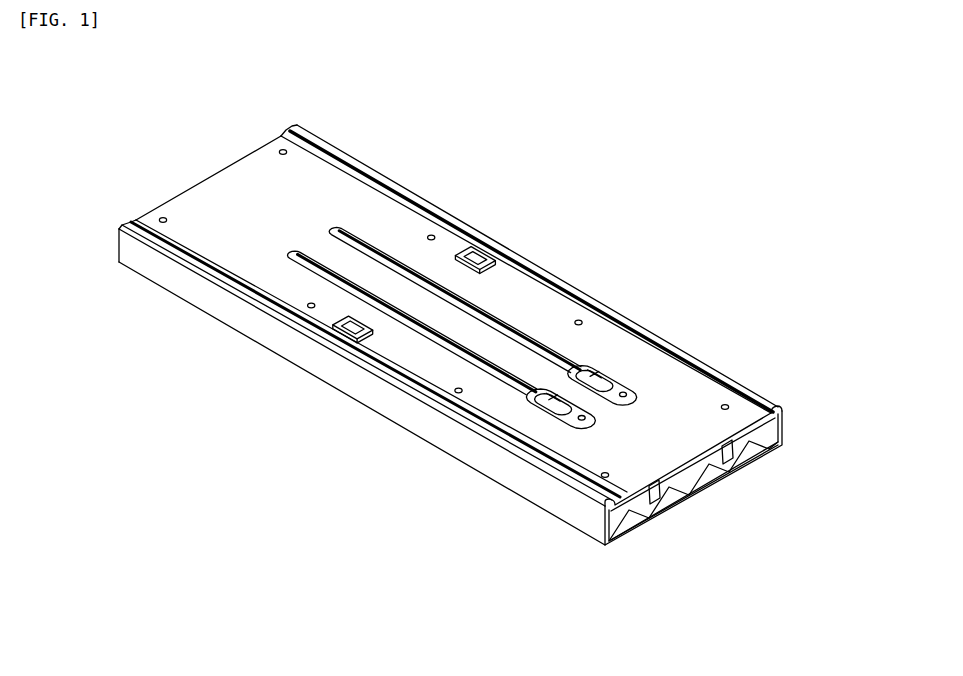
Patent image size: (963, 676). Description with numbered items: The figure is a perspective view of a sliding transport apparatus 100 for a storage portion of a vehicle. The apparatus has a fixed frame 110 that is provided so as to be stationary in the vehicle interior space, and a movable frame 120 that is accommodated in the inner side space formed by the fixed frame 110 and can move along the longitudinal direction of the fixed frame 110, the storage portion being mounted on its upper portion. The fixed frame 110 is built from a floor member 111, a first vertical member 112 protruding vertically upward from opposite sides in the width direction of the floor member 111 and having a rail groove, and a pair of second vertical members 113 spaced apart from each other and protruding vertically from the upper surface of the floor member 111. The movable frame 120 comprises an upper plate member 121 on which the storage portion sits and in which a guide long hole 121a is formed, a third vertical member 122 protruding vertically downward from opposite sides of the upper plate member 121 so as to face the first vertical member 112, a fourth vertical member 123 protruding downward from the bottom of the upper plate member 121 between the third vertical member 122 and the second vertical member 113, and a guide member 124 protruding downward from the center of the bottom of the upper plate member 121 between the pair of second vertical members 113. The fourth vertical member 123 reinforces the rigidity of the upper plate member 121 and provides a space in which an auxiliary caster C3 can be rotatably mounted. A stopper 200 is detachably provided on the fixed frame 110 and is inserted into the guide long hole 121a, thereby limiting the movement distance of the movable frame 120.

The sliding transport apparatus 100 is at (567, 178).
The fixed frame 110 is at (726, 583).
The floor member 111 is at (677, 503).
The first vertical member 112 is at (588, 519).
The second vertical member 113 is at (653, 519).
The movable frame 120 is at (859, 458).
The upper plate member 121 is at (703, 430).
The guide long hole 121a is at (524, 342).
The third vertical member 122 is at (786, 440).
The fourth vertical member 123 is at (752, 446).
The guide member 124 is at (704, 477).
The stopper 200 is at (610, 364).
The auxiliary caster C3 is at (478, 246).